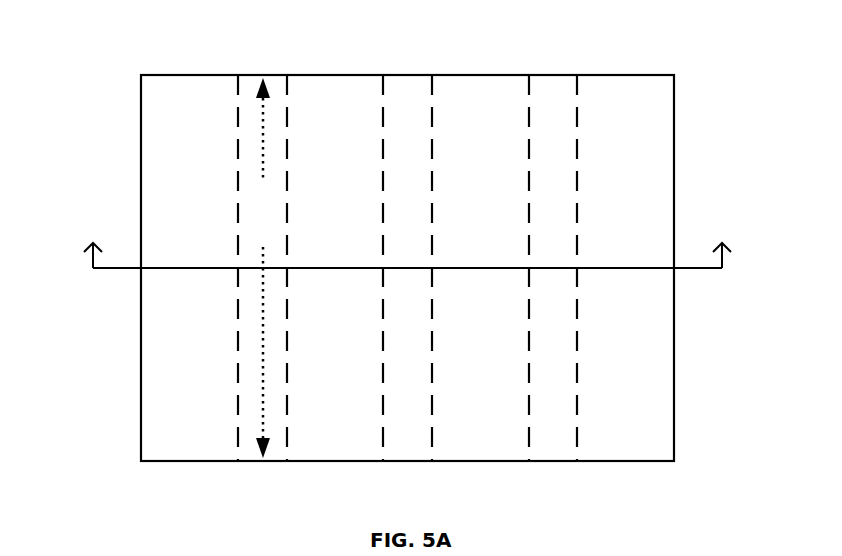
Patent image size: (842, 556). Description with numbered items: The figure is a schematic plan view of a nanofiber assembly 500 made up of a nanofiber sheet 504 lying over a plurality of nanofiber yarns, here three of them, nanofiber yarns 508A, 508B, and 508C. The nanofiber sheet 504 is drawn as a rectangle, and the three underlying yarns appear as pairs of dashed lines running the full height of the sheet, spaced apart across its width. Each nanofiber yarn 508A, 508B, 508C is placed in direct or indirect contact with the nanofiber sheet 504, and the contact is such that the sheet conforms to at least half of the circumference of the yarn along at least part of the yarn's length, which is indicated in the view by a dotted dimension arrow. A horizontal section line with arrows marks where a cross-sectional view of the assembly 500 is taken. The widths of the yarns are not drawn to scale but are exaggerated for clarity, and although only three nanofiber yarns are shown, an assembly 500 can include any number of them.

The assembly 500 is at (381, 232).
The nanofiber sheet 504 is at (658, 75).
The nanofiber yarn 508A is at (306, 125).
The nanofiber yarn 508B is at (451, 125).
The nanofiber yarn 508C is at (596, 125).